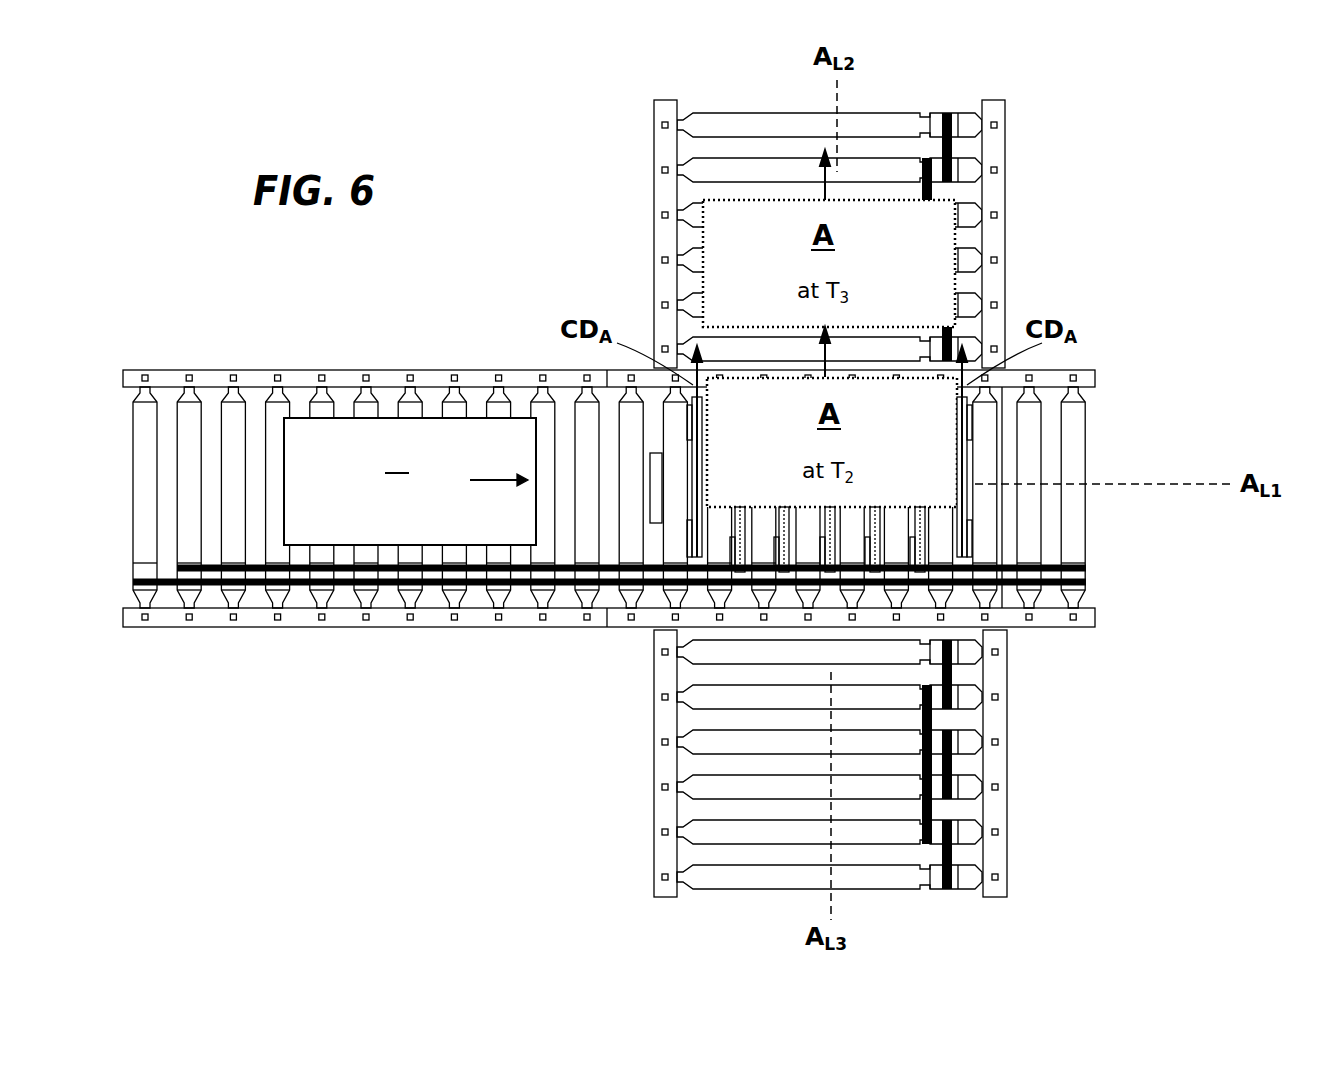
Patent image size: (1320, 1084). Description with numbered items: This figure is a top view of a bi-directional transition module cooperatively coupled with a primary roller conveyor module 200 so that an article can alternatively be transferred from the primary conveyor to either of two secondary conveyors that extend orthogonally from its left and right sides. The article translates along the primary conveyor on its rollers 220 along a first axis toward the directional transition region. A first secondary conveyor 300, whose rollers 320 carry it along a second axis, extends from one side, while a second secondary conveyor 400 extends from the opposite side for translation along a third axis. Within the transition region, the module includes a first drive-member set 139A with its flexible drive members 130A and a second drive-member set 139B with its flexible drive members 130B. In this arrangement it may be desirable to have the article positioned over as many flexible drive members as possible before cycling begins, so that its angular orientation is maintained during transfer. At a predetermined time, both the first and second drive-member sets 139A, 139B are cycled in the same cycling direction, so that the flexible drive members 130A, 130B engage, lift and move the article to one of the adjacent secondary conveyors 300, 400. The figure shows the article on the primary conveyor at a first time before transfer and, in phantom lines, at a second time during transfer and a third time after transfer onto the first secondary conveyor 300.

The primary roller conveyor module 200 is at (435, 380).
The rollers of the primary conveyor 220 is at (235, 413).
The first secondary conveyor 300 is at (665, 197).
The rollers of the secondary conveyor 320 is at (700, 222).
The second secondary conveyor 400 is at (665, 850).
The flexible drive members 130A is at (697, 562).
The first drive-member set 139A is at (775, 565).
The flexible drive members 130B is at (962, 562).
The second drive-member set 139B is at (826, 560).